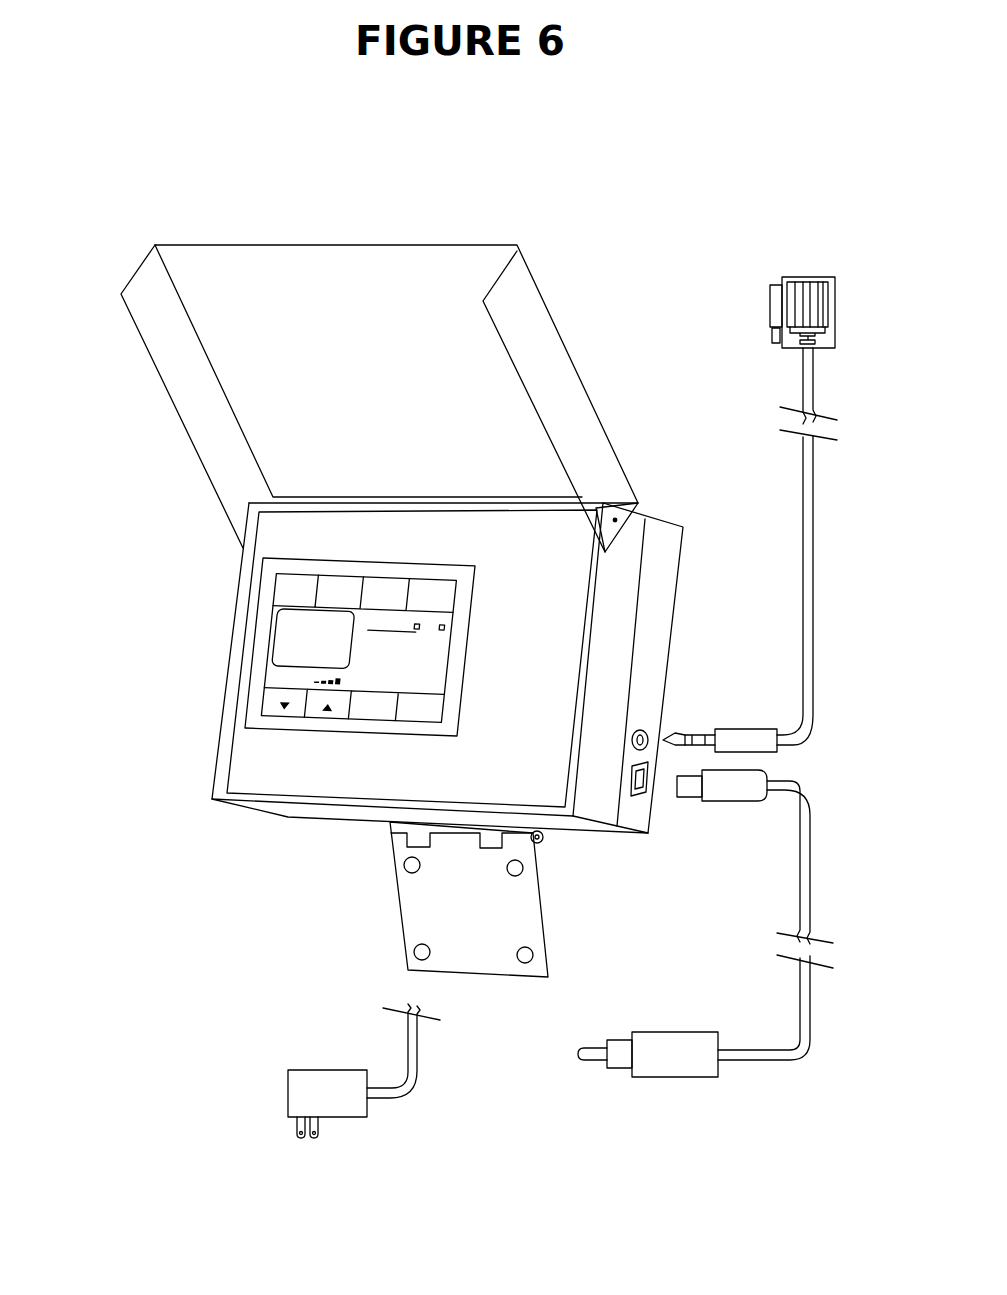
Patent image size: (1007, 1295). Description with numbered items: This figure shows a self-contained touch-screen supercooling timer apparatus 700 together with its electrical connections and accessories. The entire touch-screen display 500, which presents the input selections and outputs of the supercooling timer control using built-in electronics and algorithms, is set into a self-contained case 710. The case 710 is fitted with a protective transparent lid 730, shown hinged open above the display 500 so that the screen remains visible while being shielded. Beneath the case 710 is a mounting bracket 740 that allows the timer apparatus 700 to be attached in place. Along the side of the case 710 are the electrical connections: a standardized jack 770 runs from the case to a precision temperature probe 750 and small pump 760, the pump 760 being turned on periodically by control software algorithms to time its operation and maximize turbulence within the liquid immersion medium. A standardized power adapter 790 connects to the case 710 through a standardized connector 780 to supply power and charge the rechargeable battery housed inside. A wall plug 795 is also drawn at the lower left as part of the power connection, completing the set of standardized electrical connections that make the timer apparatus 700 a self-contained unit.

The timer apparatus 700 is at (272, 212).
The protective transparent lid 730 is at (215, 427).
The self-contained case 710 is at (275, 526).
The touch-screen display 500 is at (282, 621).
The mounting bracket 740 is at (415, 911).
The precision temperature probe 750 is at (775, 302).
The small pump 760 is at (808, 293).
The standardized jack 770 is at (803, 465).
The power connector 780 is at (800, 878).
The standardized power adapter 790 is at (650, 1045).
The power plug 795 is at (308, 1083).